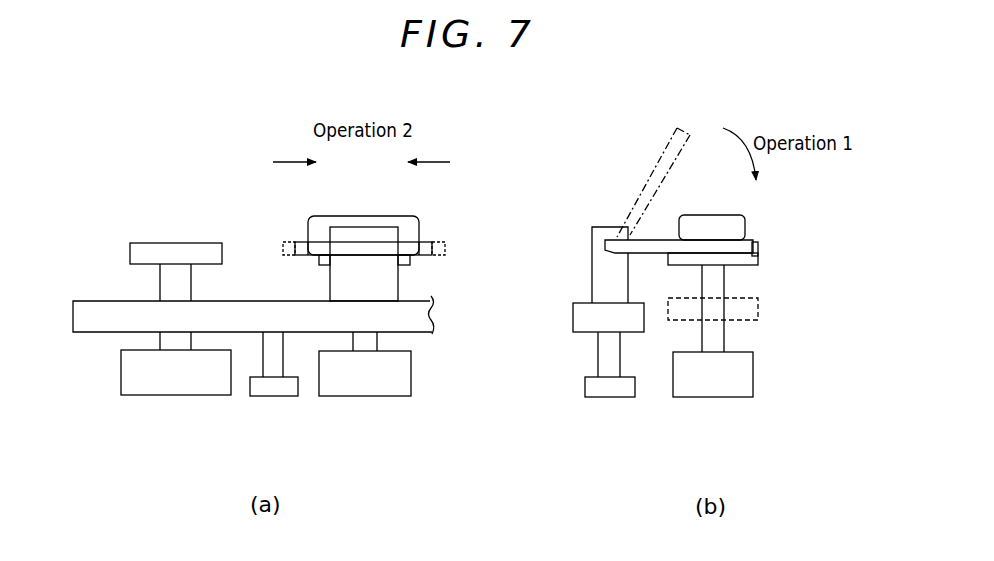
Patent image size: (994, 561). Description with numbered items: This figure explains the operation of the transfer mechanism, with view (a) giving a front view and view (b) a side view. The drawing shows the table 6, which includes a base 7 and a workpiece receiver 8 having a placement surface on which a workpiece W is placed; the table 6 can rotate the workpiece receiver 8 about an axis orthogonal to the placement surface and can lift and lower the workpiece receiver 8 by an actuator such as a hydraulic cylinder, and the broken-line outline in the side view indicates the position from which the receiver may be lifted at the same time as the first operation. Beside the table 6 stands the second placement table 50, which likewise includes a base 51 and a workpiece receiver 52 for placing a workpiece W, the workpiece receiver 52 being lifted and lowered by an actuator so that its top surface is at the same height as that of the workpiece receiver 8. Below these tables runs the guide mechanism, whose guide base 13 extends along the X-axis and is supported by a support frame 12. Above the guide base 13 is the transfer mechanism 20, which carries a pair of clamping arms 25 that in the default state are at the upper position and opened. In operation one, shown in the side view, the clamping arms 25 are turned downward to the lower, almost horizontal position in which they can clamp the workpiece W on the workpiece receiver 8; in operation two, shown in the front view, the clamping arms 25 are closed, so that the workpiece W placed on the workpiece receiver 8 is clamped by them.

The table 6 is at (436, 375).
The base 7 is at (406, 376).
The workpiece receiver 8 is at (412, 260).
The support frame 12 is at (276, 386).
The guide base 13 is at (455, 321).
The first transfer mechanism 20 is at (320, 293).
The clamping arms 25 is at (303, 240).
The second placement table 50 is at (112, 274).
The base 51 is at (124, 383).
The workpiece receiver 52 is at (140, 248).
The workpiece W is at (375, 222).